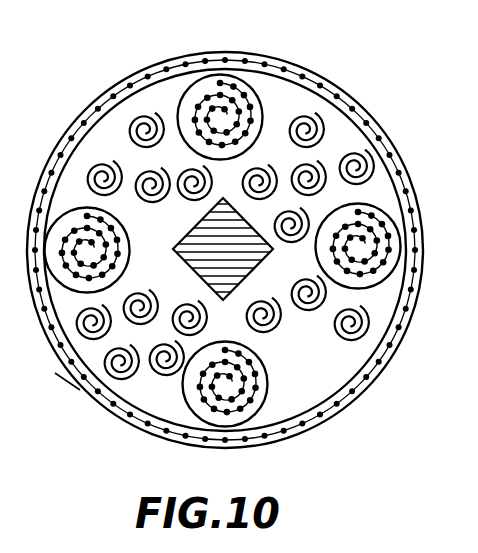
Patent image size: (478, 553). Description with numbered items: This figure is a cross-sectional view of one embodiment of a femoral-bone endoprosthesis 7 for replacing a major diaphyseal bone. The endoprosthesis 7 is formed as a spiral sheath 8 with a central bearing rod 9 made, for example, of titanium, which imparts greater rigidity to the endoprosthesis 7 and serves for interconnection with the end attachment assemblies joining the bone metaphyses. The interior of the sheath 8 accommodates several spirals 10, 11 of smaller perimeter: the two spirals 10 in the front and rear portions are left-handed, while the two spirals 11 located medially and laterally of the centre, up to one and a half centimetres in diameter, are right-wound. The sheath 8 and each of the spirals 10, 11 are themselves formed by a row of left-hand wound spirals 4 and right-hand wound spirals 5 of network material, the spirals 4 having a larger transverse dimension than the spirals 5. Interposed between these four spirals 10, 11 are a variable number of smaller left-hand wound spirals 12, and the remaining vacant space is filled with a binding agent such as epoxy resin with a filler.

The spirals 4 is at (80, 390).
The spirals 5 is at (67, 381).
The endoprosthesis 7 is at (361, 99).
The spiral sheath 8 is at (51, 160).
The central bearing rod 9 is at (190, 258).
The spirals 10 is at (124, 233).
The spirals 11 is at (243, 105).
The spirals 12 is at (368, 168).